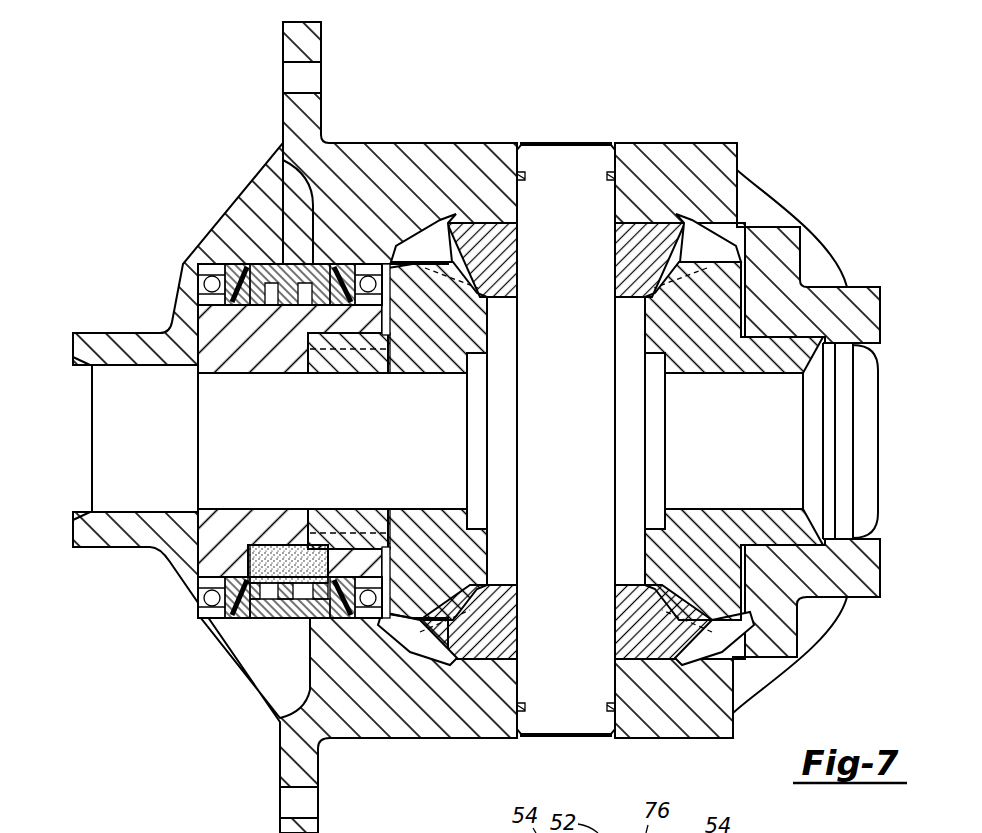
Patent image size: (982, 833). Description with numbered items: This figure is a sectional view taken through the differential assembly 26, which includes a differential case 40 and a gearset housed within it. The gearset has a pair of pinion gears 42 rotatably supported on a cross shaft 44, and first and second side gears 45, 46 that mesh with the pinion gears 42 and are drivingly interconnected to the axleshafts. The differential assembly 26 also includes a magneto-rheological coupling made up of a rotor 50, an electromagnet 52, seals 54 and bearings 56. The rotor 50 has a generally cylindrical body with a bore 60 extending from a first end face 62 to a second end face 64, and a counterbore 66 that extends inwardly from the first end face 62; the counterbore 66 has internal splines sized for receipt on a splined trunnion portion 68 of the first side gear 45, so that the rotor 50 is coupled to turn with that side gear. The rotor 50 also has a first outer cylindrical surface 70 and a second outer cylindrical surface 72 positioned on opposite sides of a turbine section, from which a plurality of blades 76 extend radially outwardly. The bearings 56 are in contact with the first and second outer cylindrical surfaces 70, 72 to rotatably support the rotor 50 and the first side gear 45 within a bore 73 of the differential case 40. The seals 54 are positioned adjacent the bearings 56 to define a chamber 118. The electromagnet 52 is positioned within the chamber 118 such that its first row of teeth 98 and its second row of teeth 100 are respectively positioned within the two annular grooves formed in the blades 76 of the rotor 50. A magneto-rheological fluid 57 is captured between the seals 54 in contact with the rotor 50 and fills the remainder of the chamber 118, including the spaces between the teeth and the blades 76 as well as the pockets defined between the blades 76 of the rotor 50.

The differential assembly 26 is at (798, 98).
The differential case 40 is at (700, 158).
The pinion gears 42 is at (637, 245).
The cross shaft 44 is at (566, 381).
The first side gear 45 is at (467, 328).
The second side gear 46 is at (737, 283).
The rotor 50 is at (213, 311).
The electromagnet 52 is at (300, 266).
The seals 54 is at (338, 266).
The bearings 56 is at (212, 610).
The magneto-rheological fluid 57 is at (262, 542).
The bore 60 is at (222, 375).
The first end face 62 is at (388, 555).
The second end face 64 is at (192, 350).
The counterbore 66 is at (330, 360).
The splined trunnion portion 68 is at (330, 540).
The first outer cylindrical surface 70 is at (340, 618).
The second outer cylindrical surface 72 is at (200, 590).
The bore 73 is at (373, 265).
The blades 76 is at (258, 266).
The first row of teeth 98 is at (305, 620).
The second row of teeth 100 is at (262, 619).
The chamber 118 is at (230, 545).